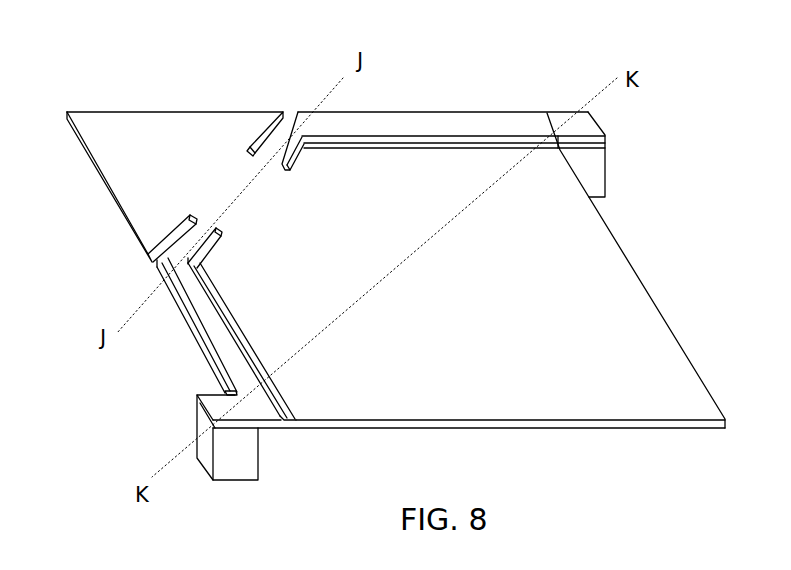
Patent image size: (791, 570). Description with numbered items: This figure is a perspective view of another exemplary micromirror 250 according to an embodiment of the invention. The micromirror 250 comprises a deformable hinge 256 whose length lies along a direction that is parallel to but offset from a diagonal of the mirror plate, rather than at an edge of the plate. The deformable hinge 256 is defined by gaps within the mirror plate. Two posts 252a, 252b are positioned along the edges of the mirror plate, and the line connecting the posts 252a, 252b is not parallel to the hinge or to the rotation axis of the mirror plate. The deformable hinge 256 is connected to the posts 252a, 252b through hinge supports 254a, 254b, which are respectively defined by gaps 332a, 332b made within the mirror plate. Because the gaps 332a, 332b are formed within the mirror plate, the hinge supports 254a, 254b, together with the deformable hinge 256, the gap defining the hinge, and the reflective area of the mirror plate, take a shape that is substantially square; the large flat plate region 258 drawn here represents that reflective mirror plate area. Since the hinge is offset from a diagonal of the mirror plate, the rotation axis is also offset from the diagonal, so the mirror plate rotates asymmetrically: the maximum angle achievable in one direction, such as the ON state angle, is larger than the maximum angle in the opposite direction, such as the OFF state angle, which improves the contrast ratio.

The micromirror 250 is at (200, 95).
The post 252a is at (578, 166).
The post 252b is at (240, 455).
The hinge support 254a is at (363, 119).
The hinge support 254b is at (200, 322).
The deformable hinge 256 is at (248, 197).
The substrate plate 258 is at (615, 289).
The gap 332a is at (447, 144).
The gap 332b is at (240, 340).